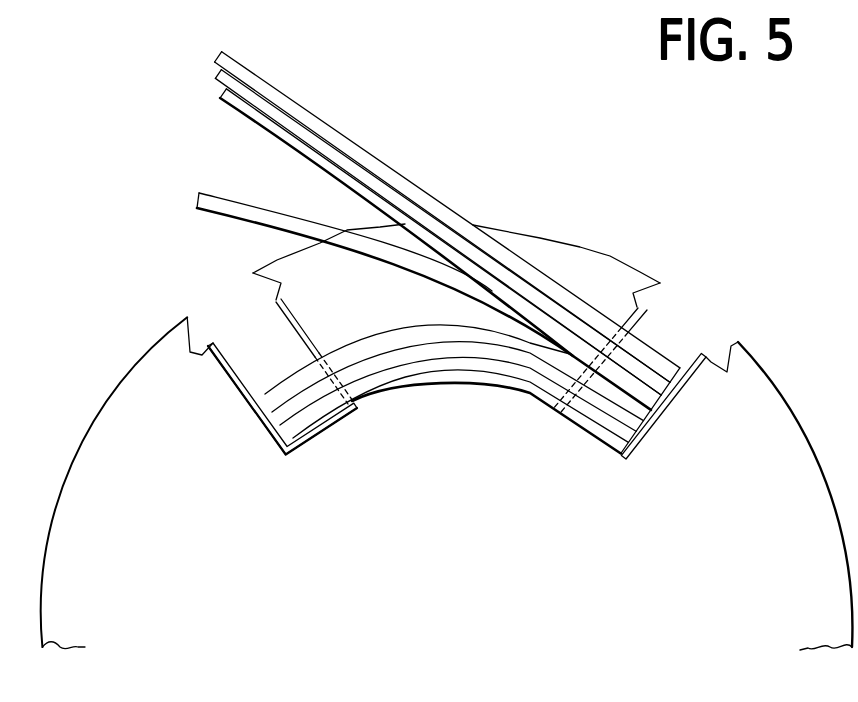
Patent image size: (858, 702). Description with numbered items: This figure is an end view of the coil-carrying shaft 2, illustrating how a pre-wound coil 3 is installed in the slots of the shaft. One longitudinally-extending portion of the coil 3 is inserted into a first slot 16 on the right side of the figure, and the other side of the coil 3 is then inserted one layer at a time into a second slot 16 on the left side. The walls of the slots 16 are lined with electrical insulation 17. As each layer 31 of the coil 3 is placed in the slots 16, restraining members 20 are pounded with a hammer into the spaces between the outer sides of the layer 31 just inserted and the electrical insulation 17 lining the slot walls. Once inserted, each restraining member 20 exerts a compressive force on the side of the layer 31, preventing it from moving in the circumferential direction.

The coil-carrying shaft 2 is at (747, 378).
The pre-wound coil 3 is at (459, 253).
The slot 16 is at (660, 323).
The electrical insulation 17 is at (695, 383).
The restraining member 20 is at (283, 442).
The layer 31 is at (342, 174).